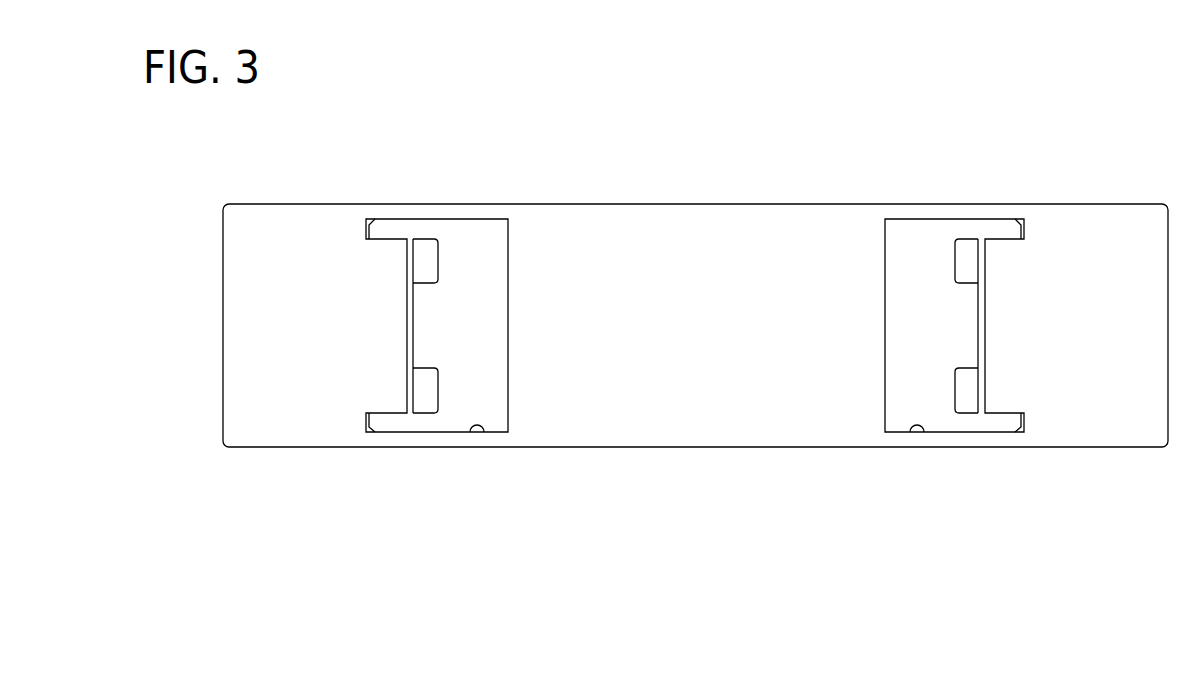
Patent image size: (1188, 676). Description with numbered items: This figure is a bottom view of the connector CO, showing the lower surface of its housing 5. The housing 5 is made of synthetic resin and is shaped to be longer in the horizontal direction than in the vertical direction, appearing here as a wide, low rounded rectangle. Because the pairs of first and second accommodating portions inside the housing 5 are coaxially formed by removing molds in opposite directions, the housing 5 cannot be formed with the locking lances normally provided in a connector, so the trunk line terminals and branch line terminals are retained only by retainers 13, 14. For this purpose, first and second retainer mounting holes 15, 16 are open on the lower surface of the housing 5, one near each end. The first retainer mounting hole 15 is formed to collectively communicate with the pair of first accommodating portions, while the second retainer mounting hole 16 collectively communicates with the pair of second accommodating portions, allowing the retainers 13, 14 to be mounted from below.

The connector CO is at (1055, 195).
The housing 5 is at (764, 193).
The retainer 13 is at (909, 240).
The retainer 14 is at (472, 240).
The first retainer mounting hole 15 is at (921, 423).
The second retainer mounting hole 16 is at (483, 423).